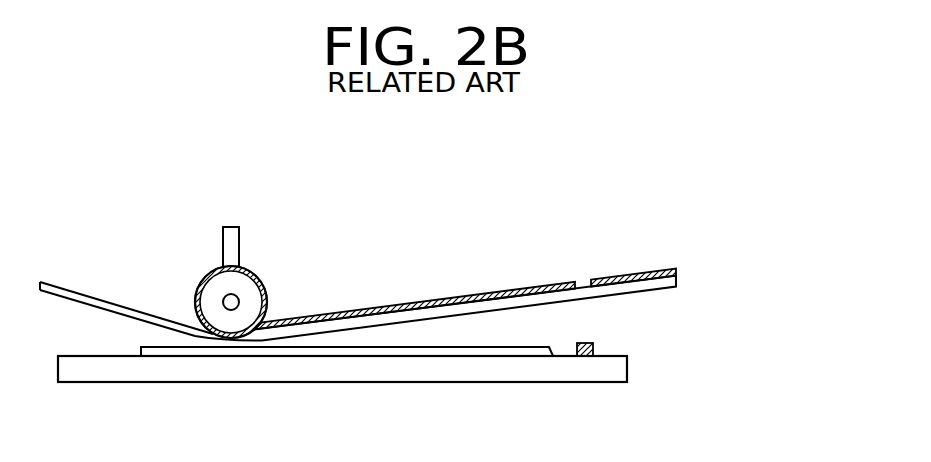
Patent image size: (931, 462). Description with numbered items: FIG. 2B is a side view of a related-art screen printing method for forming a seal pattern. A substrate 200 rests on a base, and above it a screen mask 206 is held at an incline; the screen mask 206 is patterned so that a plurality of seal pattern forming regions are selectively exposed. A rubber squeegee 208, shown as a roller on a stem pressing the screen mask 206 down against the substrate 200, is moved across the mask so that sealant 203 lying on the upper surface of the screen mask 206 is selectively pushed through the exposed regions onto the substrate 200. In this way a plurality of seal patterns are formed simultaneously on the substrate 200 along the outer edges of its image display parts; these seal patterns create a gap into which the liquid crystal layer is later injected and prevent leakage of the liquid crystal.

The substrate 200 is at (613, 373).
The sealant 203 is at (640, 272).
The screen mask 206 is at (677, 280).
The rubber squeegee 208 is at (245, 287).